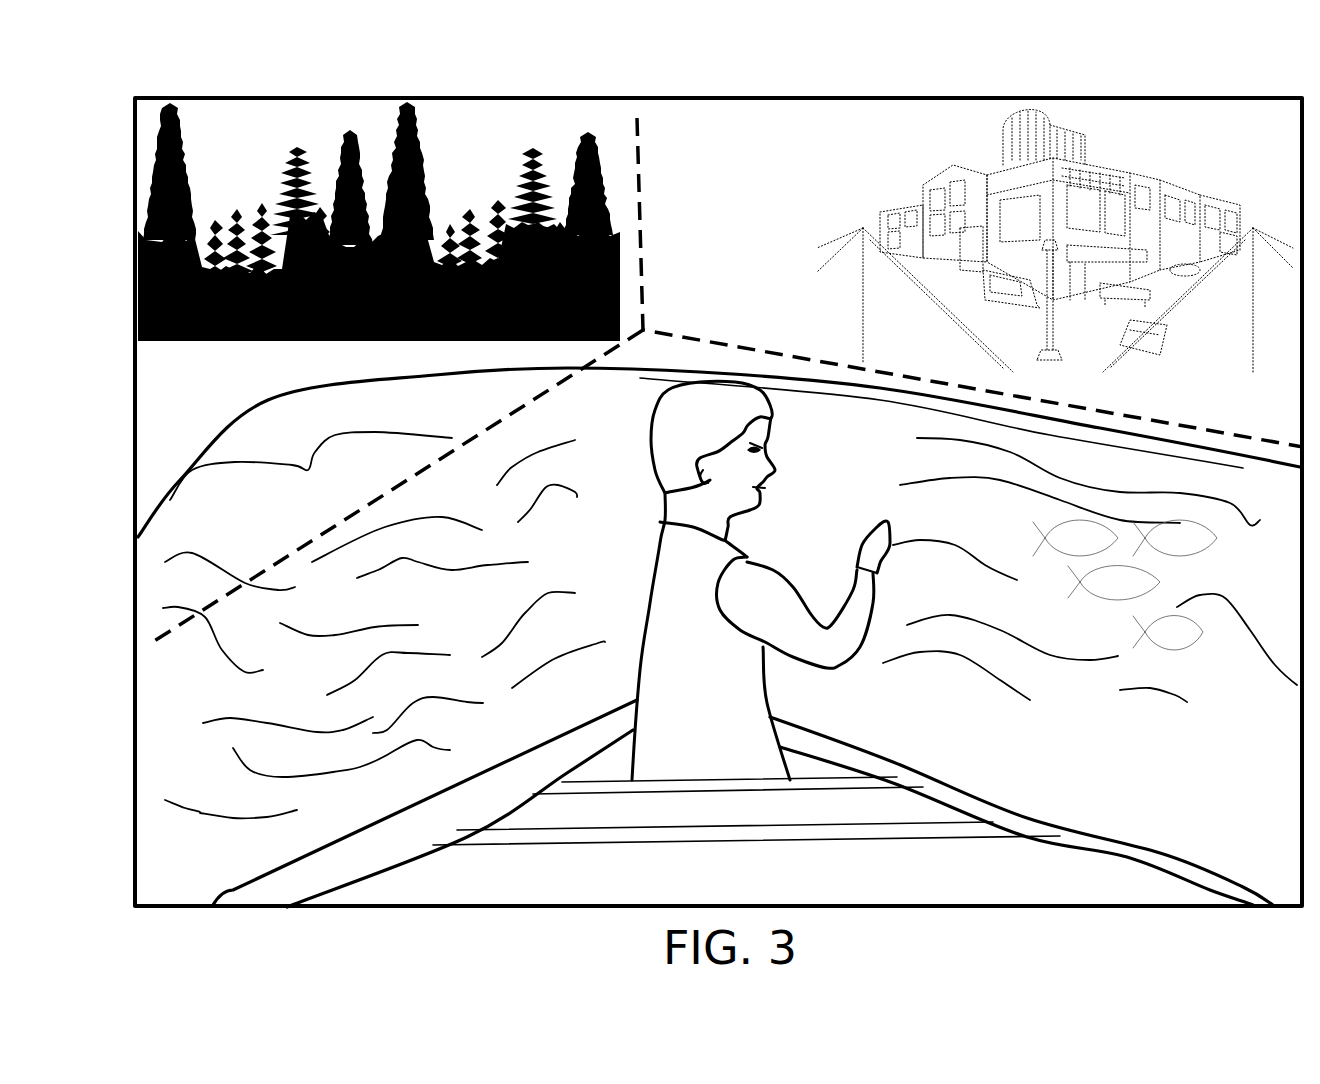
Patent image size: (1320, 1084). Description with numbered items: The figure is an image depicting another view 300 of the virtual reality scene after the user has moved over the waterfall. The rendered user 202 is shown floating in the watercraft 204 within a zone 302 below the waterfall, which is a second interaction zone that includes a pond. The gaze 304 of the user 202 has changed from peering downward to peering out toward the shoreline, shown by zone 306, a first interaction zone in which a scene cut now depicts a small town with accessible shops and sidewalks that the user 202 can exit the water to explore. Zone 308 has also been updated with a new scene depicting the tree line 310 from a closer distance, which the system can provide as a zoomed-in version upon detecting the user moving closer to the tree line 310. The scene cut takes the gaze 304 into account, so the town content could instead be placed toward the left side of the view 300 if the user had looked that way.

The view 300 is at (176, 86).
The tree line 310 is at (241, 176).
The zone 306 is at (798, 179).
The gaze 304 is at (833, 397).
The zone 308 is at (350, 494).
The zone 302 is at (1075, 699).
The user 202 is at (652, 545).
The watercraft 204 is at (955, 866).